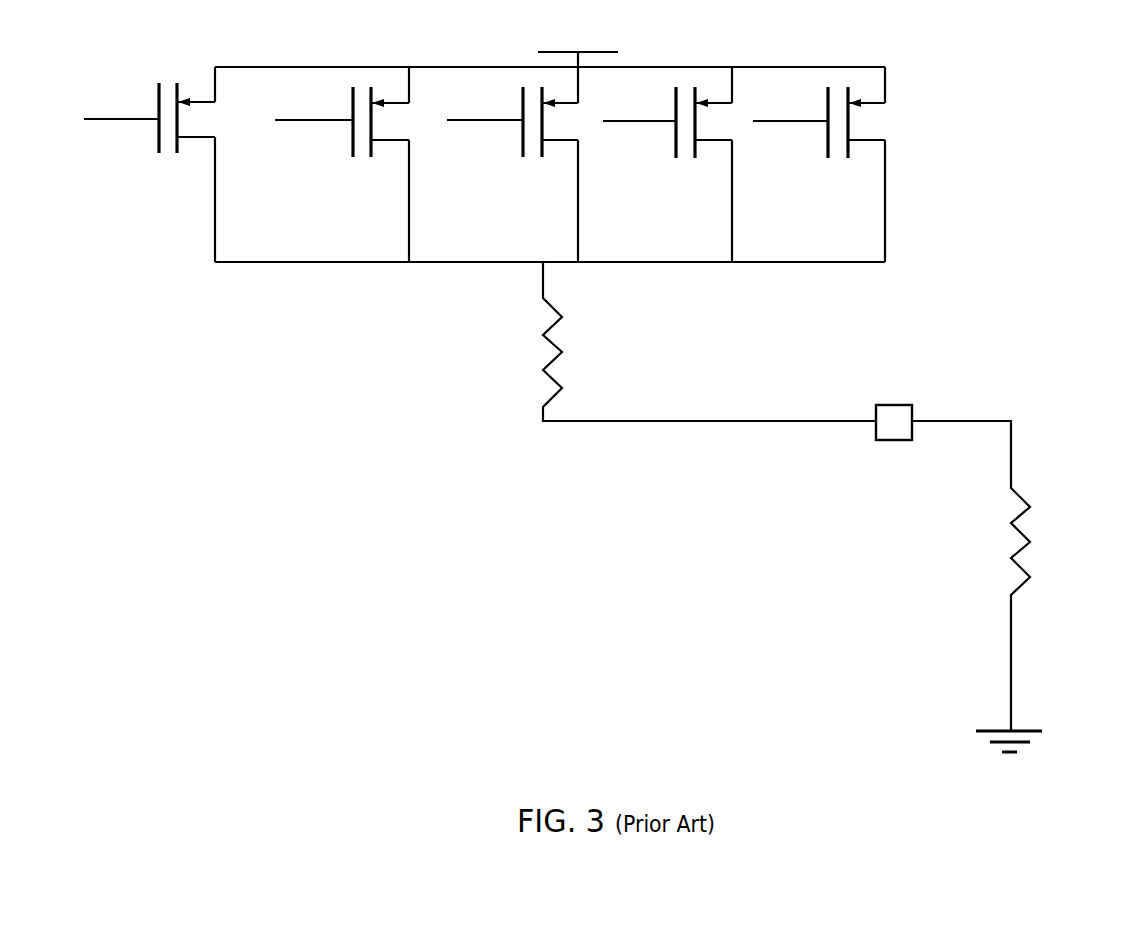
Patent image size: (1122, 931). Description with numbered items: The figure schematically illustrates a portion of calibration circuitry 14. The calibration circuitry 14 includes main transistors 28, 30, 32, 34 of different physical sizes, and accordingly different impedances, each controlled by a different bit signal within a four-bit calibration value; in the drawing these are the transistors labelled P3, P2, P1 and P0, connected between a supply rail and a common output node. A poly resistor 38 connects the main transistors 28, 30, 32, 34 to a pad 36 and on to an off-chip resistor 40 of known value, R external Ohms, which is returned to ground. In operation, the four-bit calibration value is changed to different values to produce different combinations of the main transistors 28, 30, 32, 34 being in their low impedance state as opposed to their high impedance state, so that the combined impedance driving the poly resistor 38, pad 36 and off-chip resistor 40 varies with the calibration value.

The calibration circuitry 14 is at (304, 534).
The main transistor 28 is at (353, 155).
The main transistor 30 is at (523, 156).
The main transistor 32 is at (676, 158).
The main transistor 34 is at (828, 158).
The pad 36 is at (893, 441).
The poly resistor 38 is at (543, 370).
The off-chip resistor 40 is at (1011, 558).